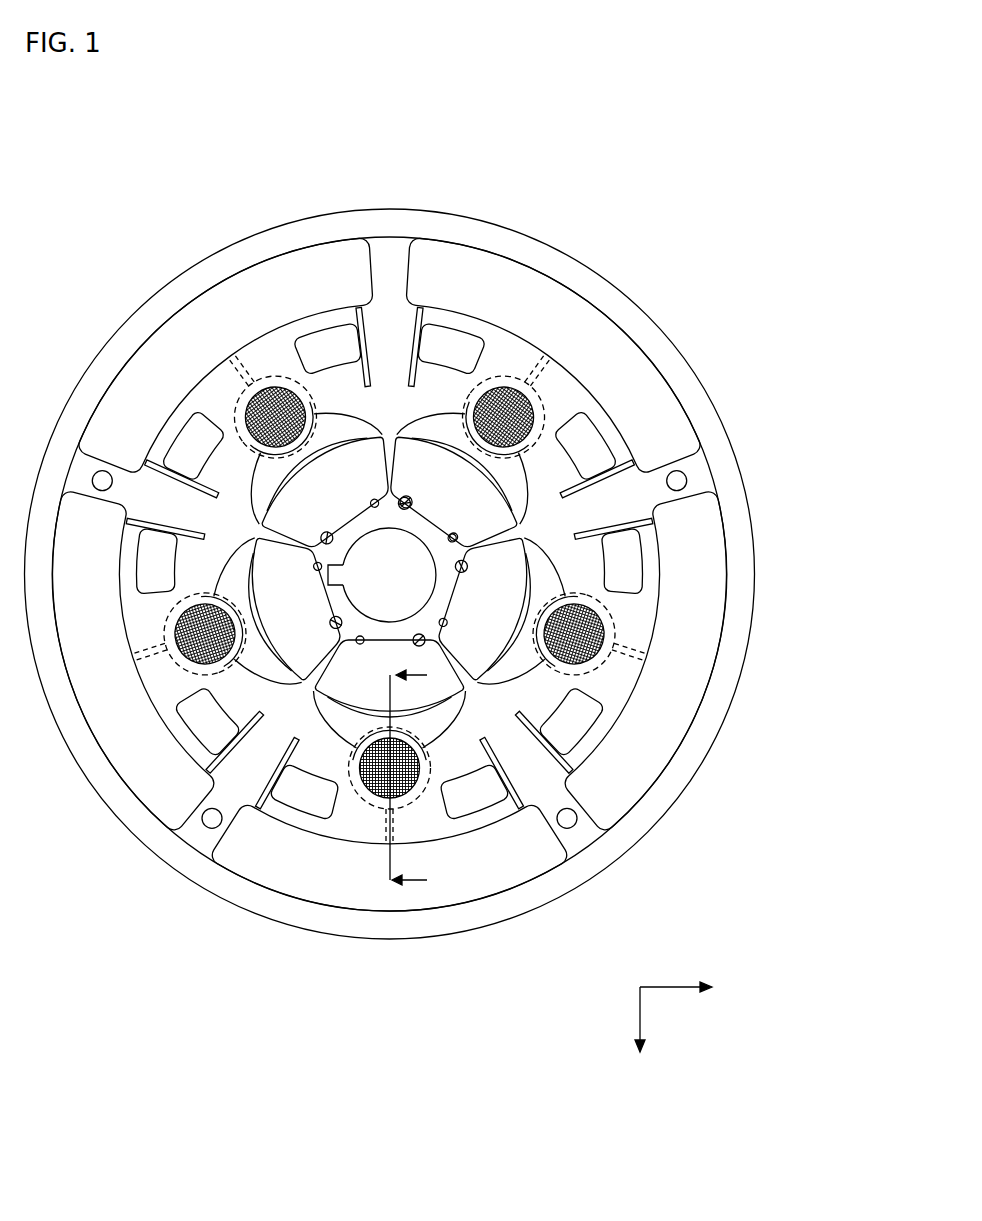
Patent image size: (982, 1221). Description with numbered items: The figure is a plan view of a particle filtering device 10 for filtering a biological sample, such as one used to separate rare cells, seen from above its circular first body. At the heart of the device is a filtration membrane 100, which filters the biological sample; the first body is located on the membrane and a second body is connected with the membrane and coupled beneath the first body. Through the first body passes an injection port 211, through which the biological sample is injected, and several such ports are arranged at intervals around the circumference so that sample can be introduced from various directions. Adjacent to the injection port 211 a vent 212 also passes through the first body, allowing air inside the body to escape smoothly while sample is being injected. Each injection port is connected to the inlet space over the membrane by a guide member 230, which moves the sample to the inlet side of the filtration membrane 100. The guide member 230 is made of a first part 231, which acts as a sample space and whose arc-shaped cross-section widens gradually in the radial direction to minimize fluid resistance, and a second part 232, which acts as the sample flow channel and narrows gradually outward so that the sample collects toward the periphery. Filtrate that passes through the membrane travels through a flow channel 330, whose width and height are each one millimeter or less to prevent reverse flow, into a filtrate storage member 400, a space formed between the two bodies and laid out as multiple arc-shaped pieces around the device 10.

The particle filtering device 10 is at (378, 143).
The filtration membrane 100 is at (426, 775).
The injection port 211 is at (408, 496).
The vent 212 is at (457, 534).
The guide member 230 is at (105, 913).
The first part 231 is at (350, 684).
The second part 232 is at (356, 732).
The flow channel 330 is at (386, 832).
The filtrate storage member 400 is at (400, 900).